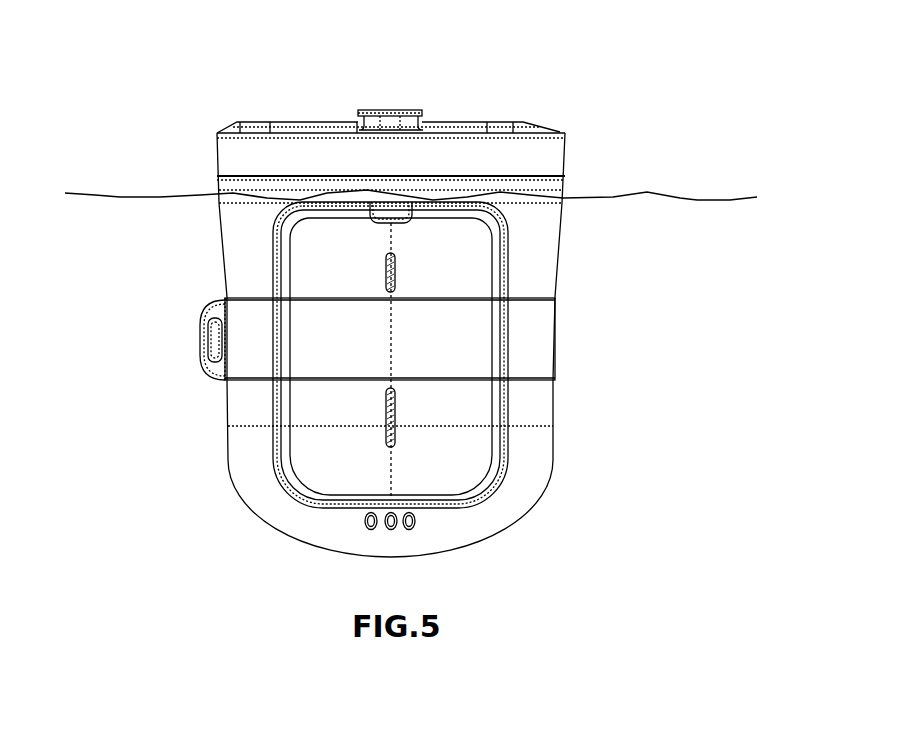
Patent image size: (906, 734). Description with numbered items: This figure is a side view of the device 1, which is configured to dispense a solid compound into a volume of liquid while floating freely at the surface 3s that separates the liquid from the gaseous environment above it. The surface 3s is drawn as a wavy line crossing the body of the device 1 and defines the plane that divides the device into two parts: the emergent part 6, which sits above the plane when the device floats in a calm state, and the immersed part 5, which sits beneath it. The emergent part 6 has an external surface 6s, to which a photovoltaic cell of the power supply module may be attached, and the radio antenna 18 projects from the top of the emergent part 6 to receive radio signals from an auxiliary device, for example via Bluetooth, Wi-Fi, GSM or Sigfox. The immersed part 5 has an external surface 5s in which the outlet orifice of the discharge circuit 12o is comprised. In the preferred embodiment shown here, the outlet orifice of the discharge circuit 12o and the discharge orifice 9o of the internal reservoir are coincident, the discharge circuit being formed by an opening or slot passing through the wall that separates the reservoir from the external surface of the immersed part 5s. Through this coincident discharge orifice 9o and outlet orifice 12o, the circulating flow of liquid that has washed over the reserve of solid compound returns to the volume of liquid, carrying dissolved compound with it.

The device 1 is at (201, 93).
The radio antenna 18 is at (417, 110).
The emergent part 6 is at (565, 153).
The external surface of the emergent part 6s is at (391, 174).
The surface 3s is at (717, 200).
The immersed part 5 is at (551, 466).
The external surface of the immersed part 5s is at (390, 366).
The discharge orifice 9o is at (393, 263).
The outlet orifice of the discharge circuit 12o is at (393, 408).